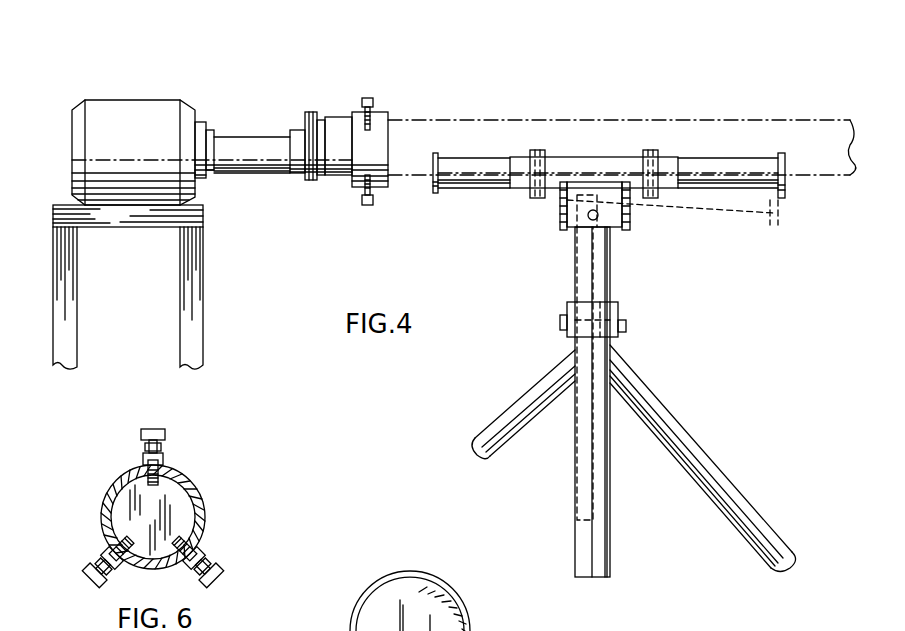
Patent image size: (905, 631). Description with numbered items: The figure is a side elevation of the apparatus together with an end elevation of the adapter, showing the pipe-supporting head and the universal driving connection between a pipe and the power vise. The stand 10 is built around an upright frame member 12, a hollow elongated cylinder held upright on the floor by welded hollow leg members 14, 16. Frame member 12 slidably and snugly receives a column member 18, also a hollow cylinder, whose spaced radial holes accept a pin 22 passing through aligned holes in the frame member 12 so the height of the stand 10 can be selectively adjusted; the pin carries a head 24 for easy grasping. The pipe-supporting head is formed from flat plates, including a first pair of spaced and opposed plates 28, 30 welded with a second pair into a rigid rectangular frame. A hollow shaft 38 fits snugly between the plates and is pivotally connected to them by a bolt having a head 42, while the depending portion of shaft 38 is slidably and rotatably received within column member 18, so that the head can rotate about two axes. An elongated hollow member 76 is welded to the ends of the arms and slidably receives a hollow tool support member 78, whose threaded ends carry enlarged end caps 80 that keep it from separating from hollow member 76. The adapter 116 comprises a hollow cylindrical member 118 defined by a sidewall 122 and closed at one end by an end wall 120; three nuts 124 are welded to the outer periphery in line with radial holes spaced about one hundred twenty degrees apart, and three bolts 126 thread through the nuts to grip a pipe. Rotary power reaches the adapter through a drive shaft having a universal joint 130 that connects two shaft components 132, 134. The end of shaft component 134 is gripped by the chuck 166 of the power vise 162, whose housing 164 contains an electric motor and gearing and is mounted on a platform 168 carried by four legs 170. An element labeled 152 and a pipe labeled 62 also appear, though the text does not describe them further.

In FIG. 4, the stand 10 is at (565, 487).
In FIG. 4, the frame member 12 is at (605, 548).
In FIG. 4, the leg member 14 is at (510, 423).
In FIG. 4, the leg member 16 is at (695, 455).
In FIG. 4, the column member 18 is at (595, 402).
In FIG. 4, the pin 22 is at (622, 330).
In FIG. 4, the head 24 is at (565, 326).
In FIG. 4, the plate 28 is at (562, 220).
In FIG. 4, the plate 30 is at (628, 222).
In FIG. 4, the shaft 38 is at (577, 272).
In FIG. 4, the head 42 is at (598, 218).
In FIG. 4, the pipe 62 is at (800, 116).
In FIG. 4, the hollow member 76 is at (590, 160).
In FIG. 4, the tool support member 78 is at (470, 178).
In FIG. 4, the end cap 80 is at (435, 193).
In FIG. 4, the adapter 116 is at (359, 146).
In FIG. 6, the adapter 116 is at (158, 504).
In FIG. 4, the hollow member 118 is at (358, 186).
In FIG. 6, the hollow member 118 is at (120, 478).
In FIG. 6, the end wall 120 is at (125, 517).
In FIG. 6, the sidewall 122 is at (203, 520).
In FIG. 6, the nut 124 is at (166, 473).
In FIG. 4, the bolt 126 is at (370, 100).
In FIG. 6, the bolt 126 is at (150, 440).
In FIG. 4, the universal joint 130 is at (296, 101).
In FIG. 4, the shaft component 132 is at (340, 125).
In FIG. 4, the shaft component 134 is at (247, 160).
In FIG. 6, the ring 152 is at (360, 630).
In FIG. 4, the power vise 162 is at (134, 120).
In FIG. 4, the housing 164 is at (155, 113).
In FIG. 4, the chuck 166 is at (210, 138).
In FIG. 4, the platform 168 is at (112, 226).
In FIG. 4, the leg 170 is at (68, 315).